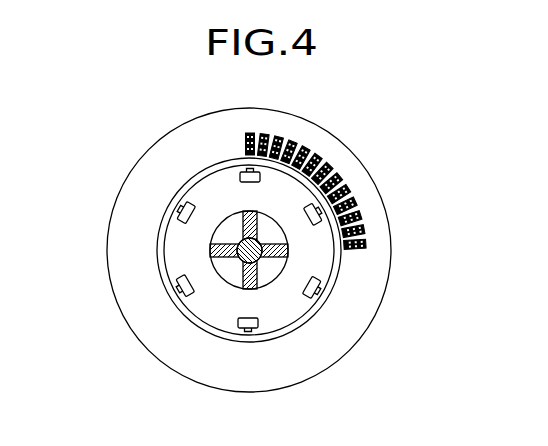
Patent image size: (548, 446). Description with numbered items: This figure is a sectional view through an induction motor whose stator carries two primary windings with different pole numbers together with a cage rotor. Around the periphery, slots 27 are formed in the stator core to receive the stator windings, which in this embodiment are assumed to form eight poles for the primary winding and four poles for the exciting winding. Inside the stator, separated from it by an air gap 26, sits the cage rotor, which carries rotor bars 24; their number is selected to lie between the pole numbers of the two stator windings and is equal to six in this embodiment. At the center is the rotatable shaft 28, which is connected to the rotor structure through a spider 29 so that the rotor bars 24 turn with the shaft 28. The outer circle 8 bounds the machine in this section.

The motor housing 8 is at (305, 365).
The rotor bars 24 is at (238, 329).
The air gap 26 is at (178, 302).
The slots 27 is at (358, 218).
The rotatable shaft 28 is at (260, 258).
The spider 29 is at (238, 209).